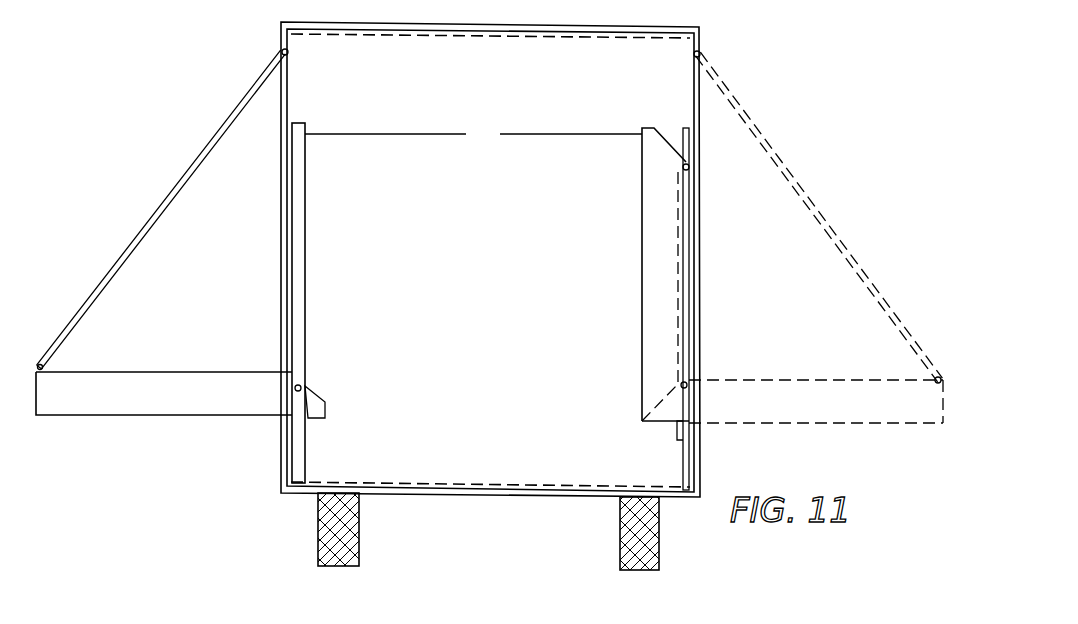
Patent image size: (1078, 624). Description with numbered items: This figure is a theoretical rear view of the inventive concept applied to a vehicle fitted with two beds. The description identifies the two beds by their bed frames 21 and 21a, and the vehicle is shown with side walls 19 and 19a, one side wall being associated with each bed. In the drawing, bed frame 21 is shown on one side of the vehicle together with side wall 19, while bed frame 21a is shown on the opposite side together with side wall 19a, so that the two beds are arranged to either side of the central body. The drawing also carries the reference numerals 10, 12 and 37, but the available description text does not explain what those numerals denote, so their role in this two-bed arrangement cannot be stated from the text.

The collapsible table unit 10 is at (163, 203).
The side wall / section line 12- 12 is at (281, 31).
The side wall 19 is at (800, 207).
The side wall 19a is at (155, 226).
The bed frame 21 is at (648, 313).
The bed frame 21a is at (180, 418).
The cross rod 37 is at (473, 138).